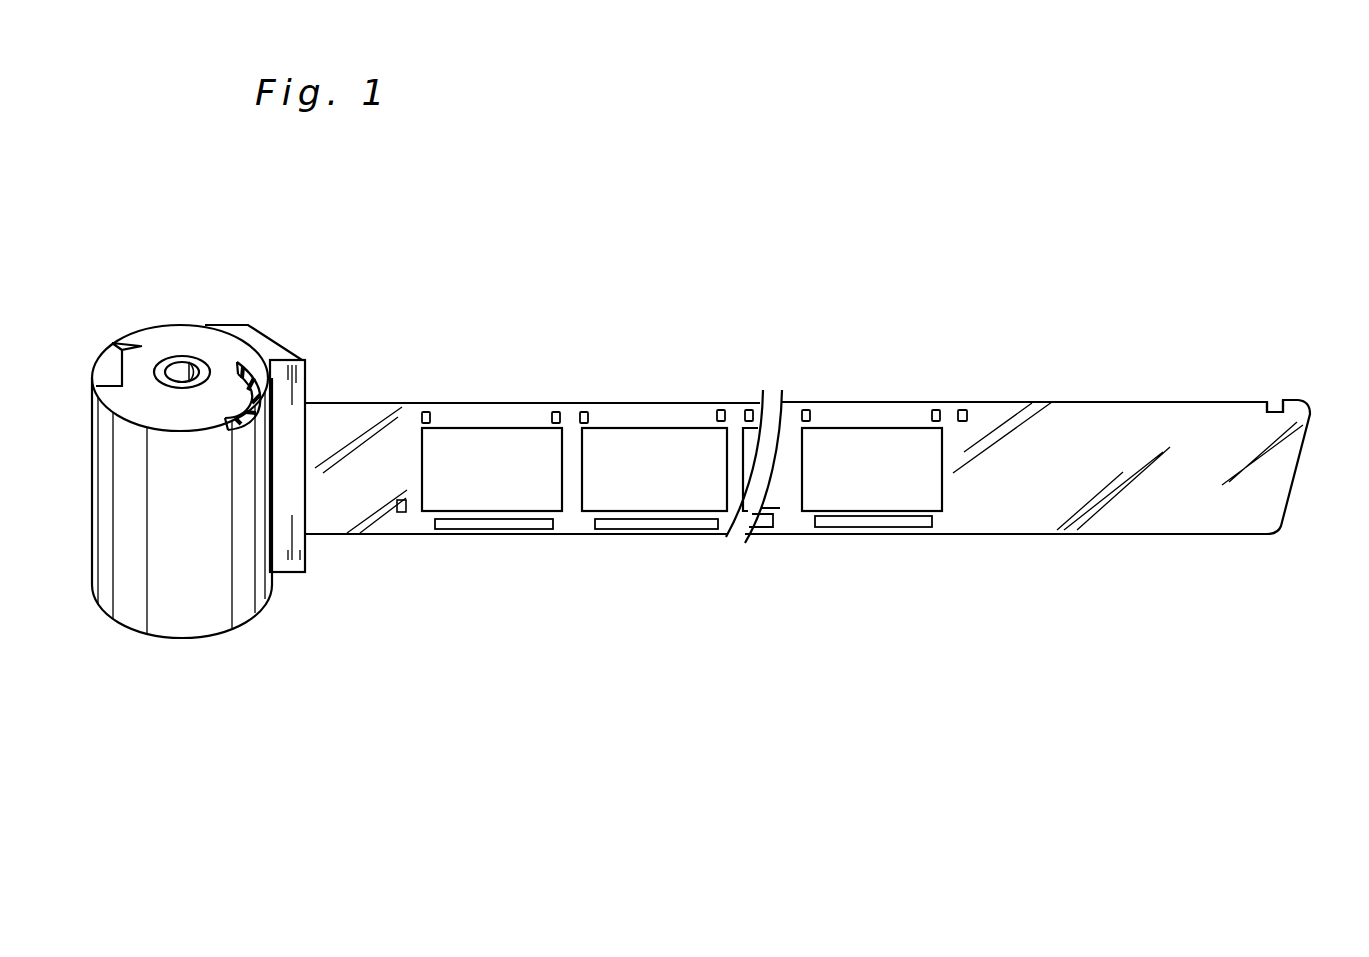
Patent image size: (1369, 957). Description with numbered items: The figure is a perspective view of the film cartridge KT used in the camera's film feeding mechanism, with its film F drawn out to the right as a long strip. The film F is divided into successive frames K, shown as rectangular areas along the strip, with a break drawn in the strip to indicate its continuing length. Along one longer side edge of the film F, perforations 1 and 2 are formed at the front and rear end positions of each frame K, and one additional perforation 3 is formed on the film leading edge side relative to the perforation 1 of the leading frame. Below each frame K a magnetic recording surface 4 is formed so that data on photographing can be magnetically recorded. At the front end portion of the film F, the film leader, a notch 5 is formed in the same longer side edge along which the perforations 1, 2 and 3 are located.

The film cartridge KT is at (200, 337).
The film F is at (1283, 463).
The frame K is at (432, 500).
The perforation 1 is at (553, 410).
The perforation 2 is at (427, 410).
The perforation 3 is at (963, 405).
The magnetic recording surface 4 is at (502, 527).
The notch 5 is at (1280, 400).